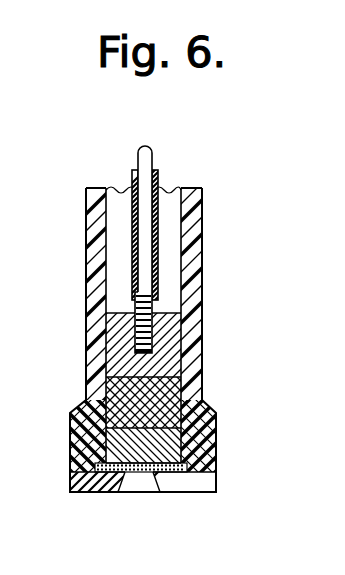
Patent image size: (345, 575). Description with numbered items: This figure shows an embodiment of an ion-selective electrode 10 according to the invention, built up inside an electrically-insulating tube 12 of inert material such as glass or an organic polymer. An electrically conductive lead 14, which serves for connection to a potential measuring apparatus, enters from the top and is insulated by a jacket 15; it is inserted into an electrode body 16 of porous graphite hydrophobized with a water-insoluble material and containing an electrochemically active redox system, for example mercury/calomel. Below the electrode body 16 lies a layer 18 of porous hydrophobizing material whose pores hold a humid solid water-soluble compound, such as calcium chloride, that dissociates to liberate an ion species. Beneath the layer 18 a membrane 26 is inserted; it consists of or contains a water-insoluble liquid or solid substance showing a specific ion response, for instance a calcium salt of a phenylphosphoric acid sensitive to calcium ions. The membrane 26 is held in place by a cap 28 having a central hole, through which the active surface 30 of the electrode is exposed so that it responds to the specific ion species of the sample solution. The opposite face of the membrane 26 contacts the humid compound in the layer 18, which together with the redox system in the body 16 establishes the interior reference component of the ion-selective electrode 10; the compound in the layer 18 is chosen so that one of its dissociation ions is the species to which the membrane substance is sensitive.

The ion-sensitive electrode 10 is at (207, 194).
The tube 12 is at (86, 298).
The electrically conductive lead 14 is at (146, 243).
The jacket 15 is at (130, 235).
The electrode body 16 is at (163, 363).
The layer 18 is at (195, 447).
The membrane 26 is at (125, 486).
The cap 28 is at (76, 482).
The active surface 30 is at (152, 474).